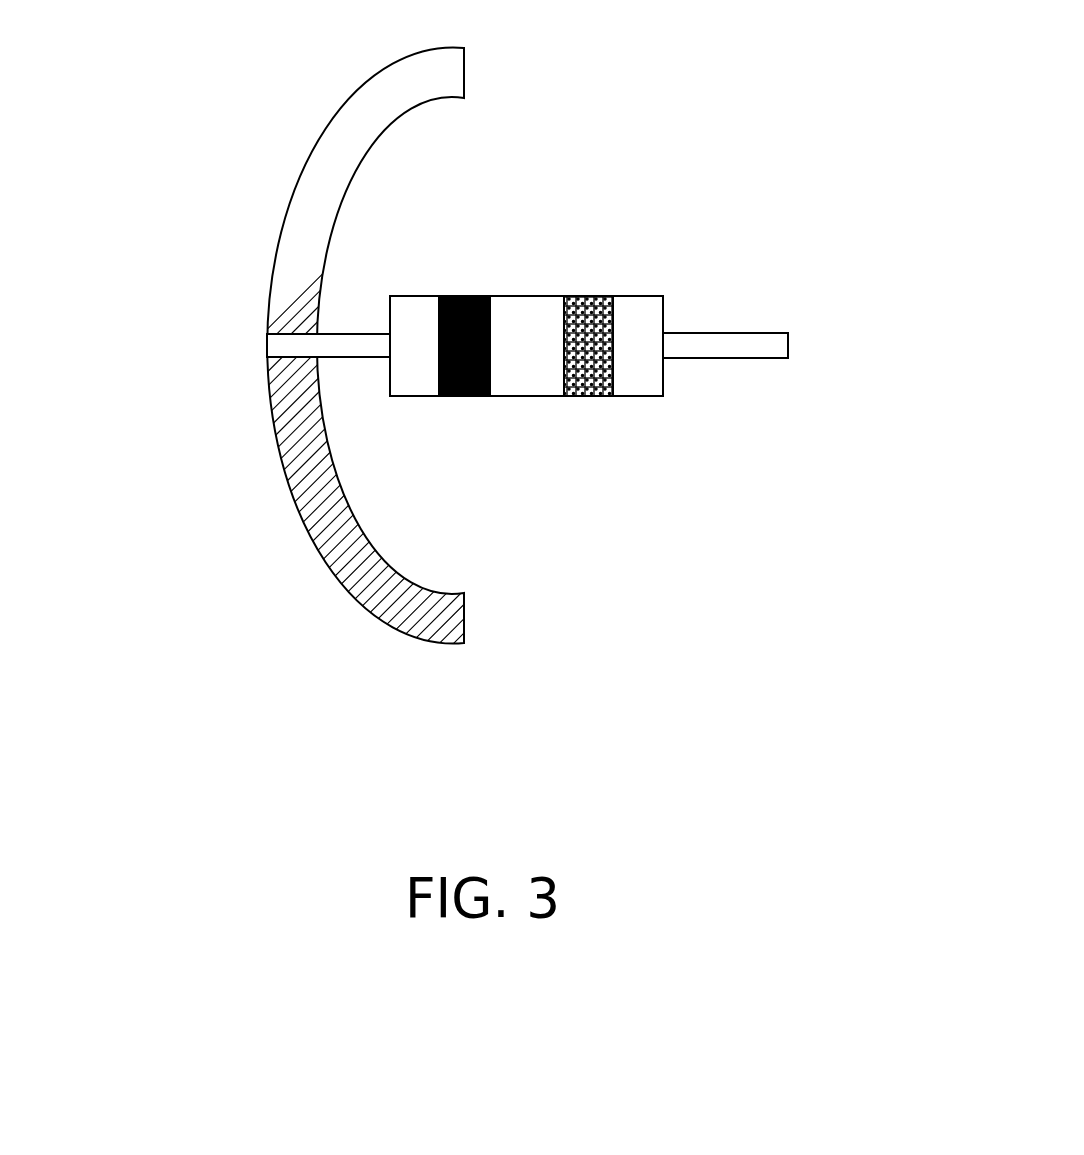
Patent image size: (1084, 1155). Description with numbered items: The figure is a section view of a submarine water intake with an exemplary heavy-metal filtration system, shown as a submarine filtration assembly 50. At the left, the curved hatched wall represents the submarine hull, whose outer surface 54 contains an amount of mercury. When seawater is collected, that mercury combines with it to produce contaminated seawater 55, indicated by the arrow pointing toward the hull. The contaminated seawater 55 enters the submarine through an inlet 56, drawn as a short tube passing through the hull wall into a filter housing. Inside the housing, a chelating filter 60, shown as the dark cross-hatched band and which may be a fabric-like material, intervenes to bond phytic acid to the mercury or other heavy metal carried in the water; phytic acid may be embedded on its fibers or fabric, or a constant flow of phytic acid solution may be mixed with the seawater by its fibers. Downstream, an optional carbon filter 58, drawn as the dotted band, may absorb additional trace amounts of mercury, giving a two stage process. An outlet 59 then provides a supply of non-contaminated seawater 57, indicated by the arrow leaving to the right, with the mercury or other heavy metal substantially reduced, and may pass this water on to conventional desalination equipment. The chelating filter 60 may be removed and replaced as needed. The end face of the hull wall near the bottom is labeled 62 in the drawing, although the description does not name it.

The submarine filtration assembly 50 is at (203, 61).
The outer surface 54 is at (388, 620).
The contaminated seawater 55 is at (245, 345).
The inlet 56 is at (266, 346).
The non-contaminated seawater 57 is at (807, 352).
The carbon filter 58 is at (587, 313).
The outlet 59 is at (725, 342).
The chelating filter 60 is at (468, 303).
The electrode end face 62 is at (452, 612).